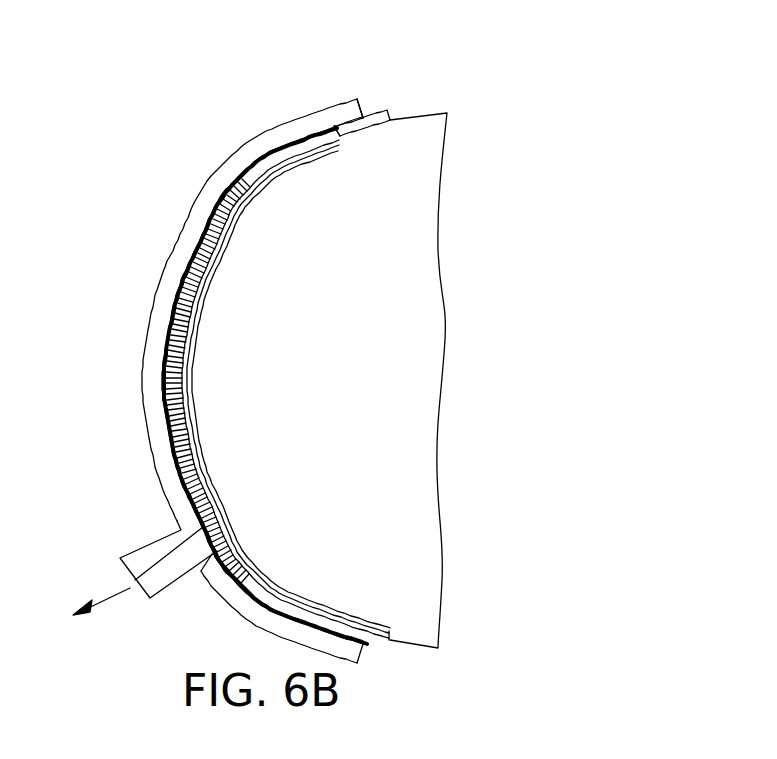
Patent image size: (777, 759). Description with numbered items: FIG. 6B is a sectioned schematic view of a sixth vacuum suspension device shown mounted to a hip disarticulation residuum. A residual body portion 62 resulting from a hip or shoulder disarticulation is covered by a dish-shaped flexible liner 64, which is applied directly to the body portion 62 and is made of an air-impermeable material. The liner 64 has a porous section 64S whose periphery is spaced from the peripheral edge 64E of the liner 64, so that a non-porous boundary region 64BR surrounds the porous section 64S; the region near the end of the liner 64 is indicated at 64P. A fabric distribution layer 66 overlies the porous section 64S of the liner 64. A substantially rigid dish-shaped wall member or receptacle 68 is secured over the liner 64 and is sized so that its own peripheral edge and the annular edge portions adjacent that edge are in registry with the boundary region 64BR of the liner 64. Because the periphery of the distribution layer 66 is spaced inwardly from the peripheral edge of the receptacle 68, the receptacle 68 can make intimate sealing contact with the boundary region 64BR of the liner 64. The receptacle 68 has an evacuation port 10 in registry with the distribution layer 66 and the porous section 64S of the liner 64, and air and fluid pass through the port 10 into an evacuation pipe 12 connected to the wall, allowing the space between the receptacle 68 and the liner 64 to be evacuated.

The evacuation port 10 is at (198, 542).
The evacuation pipe 12 is at (161, 592).
The residual body portion 62 is at (330, 392).
The flexible liner 64 is at (386, 111).
The non-porous boundary region 64BR is at (337, 126).
The peripheral edge of the liner 64E is at (392, 117).
The peripheral portion 64P is at (366, 106).
The porous section 64S is at (172, 452).
The distribution layer 66 is at (166, 373).
The receptacle 68 is at (160, 285).